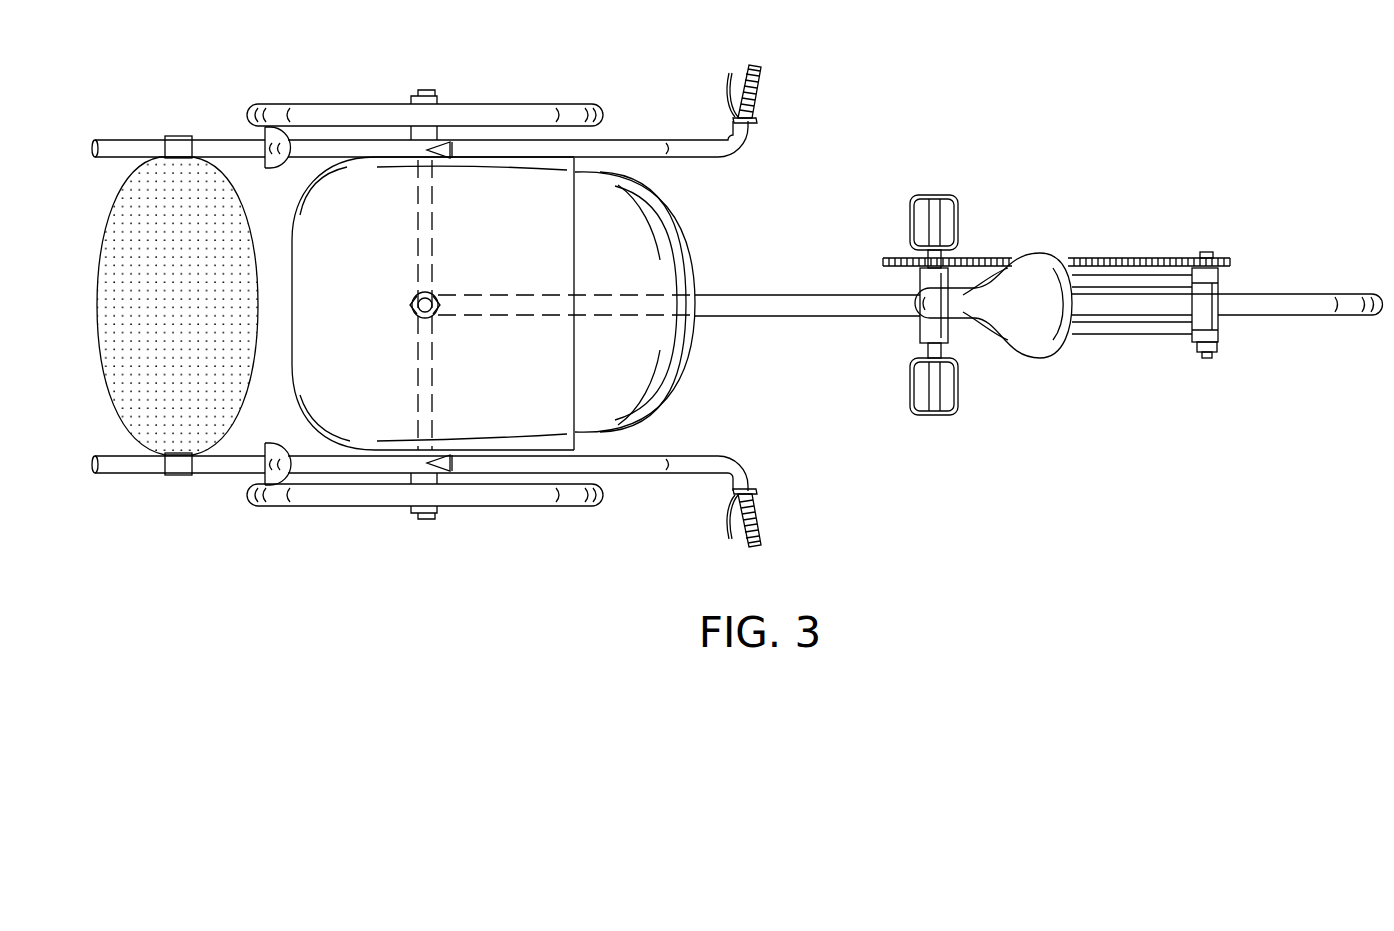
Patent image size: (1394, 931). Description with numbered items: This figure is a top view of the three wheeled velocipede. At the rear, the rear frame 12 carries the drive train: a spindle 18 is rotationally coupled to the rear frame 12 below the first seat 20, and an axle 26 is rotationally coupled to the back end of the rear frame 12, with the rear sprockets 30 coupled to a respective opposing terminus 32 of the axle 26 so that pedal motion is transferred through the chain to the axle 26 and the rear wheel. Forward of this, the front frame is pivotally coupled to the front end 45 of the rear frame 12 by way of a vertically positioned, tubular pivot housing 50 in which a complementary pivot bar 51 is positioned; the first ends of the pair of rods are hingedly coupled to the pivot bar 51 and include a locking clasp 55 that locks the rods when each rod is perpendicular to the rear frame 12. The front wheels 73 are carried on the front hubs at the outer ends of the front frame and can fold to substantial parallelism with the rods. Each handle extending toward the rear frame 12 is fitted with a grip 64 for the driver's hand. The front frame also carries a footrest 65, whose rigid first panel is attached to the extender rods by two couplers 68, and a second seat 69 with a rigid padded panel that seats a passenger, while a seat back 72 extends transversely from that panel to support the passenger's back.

The rear frame 12 is at (500, 299).
The spindle 18 is at (918, 351).
The first seat 20 is at (1032, 266).
The axle 26 is at (1205, 359).
The rear sprockets 30 is at (1221, 252).
The opposing terminus 32 is at (1199, 249).
The front end 45 is at (438, 318).
The pivot housing 50 is at (430, 323).
The pivot bar 51 is at (416, 316).
The locking clasp 55 is at (416, 294).
The grip 64 is at (766, 93).
The footrest 65 is at (187, 222).
The couplers 68 is at (177, 471).
The second seat 69 is at (483, 205).
The seat back 72 is at (689, 271).
The front wheels 73 is at (364, 103).